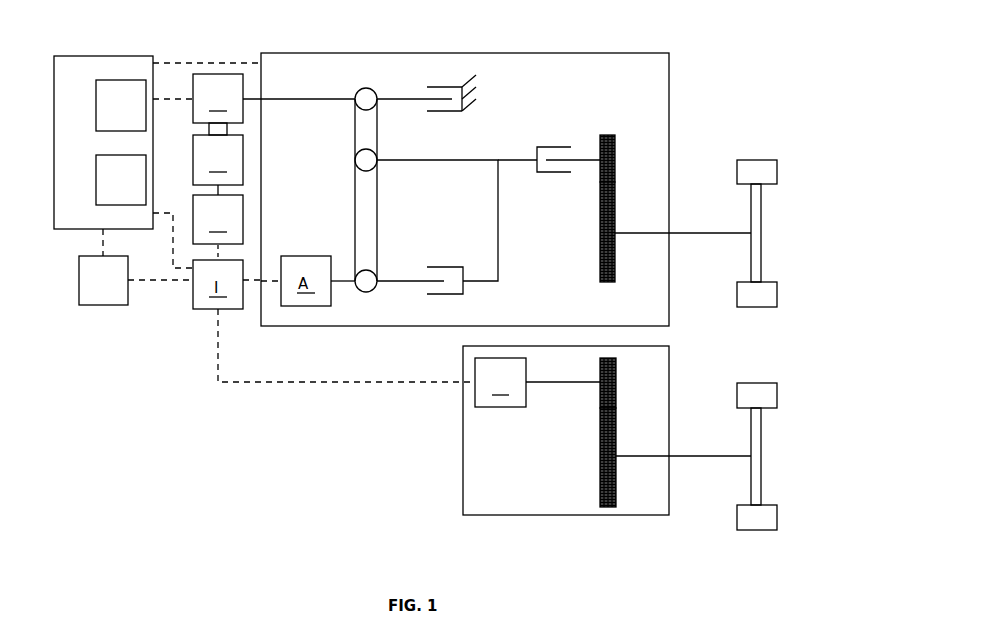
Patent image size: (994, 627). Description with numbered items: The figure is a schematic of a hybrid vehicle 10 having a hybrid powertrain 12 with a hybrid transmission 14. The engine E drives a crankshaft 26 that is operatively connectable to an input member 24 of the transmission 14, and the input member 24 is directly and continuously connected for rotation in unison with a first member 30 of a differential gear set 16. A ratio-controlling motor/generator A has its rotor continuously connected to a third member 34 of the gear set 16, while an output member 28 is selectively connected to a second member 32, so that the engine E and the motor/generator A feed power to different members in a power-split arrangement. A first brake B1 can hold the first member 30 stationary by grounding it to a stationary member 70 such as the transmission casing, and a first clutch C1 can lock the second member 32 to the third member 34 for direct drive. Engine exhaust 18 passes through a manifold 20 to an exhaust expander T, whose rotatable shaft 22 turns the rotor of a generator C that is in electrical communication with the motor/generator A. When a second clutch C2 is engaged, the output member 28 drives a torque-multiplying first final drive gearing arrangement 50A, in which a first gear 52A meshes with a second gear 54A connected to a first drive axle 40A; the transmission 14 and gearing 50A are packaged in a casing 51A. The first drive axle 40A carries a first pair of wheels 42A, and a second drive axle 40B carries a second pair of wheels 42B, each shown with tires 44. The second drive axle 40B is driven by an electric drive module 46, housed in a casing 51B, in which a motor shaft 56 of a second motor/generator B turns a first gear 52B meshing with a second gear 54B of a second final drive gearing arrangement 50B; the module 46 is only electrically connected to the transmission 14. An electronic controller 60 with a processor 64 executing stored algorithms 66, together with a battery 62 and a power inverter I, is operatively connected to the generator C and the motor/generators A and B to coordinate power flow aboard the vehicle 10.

The hybrid vehicle 10 is at (668, 28).
The hybrid powertrain 12 is at (328, 46).
The hybrid transmission 14 is at (528, 83).
The differential gear set 16 is at (361, 169).
The engine exhaust 18 is at (192, 150).
The manifold 20 is at (209, 126).
The rotatable shaft 22 is at (217, 189).
The input member 24 is at (331, 101).
The crankshaft 26 is at (257, 97).
The output member 28 is at (497, 157).
The first member 30 is at (357, 93).
The second member 32 is at (362, 162).
The third member 34 is at (366, 285).
The first drive axle 40A is at (687, 232).
The second drive axle 40B is at (687, 456).
The first pair of wheels 42A is at (765, 216).
The second pair of wheels 42B is at (765, 440).
The tires 44 is at (757, 159).
The electric drive module 46 is at (571, 429).
The first final drive gearing arrangement 50A is at (627, 207).
The second final drive gearing arrangement 50B is at (625, 425).
The casing 51A is at (474, 53).
The casing 51B is at (517, 517).
The first gear 52A is at (617, 160).
The first gear 52B is at (618, 382).
The second gear 54A is at (617, 255).
The second gear 54B is at (618, 465).
The motor shaft 56 is at (557, 386).
The electronic controller 60 is at (82, 150).
The battery 62 is at (112, 289).
The processor 64 is at (129, 113).
The stored algorithms 66 is at (129, 187).
The stationary member 70 is at (467, 106).
The first brake B1 is at (442, 75).
The first clutch C1 is at (425, 263).
The second clutch C2 is at (552, 144).